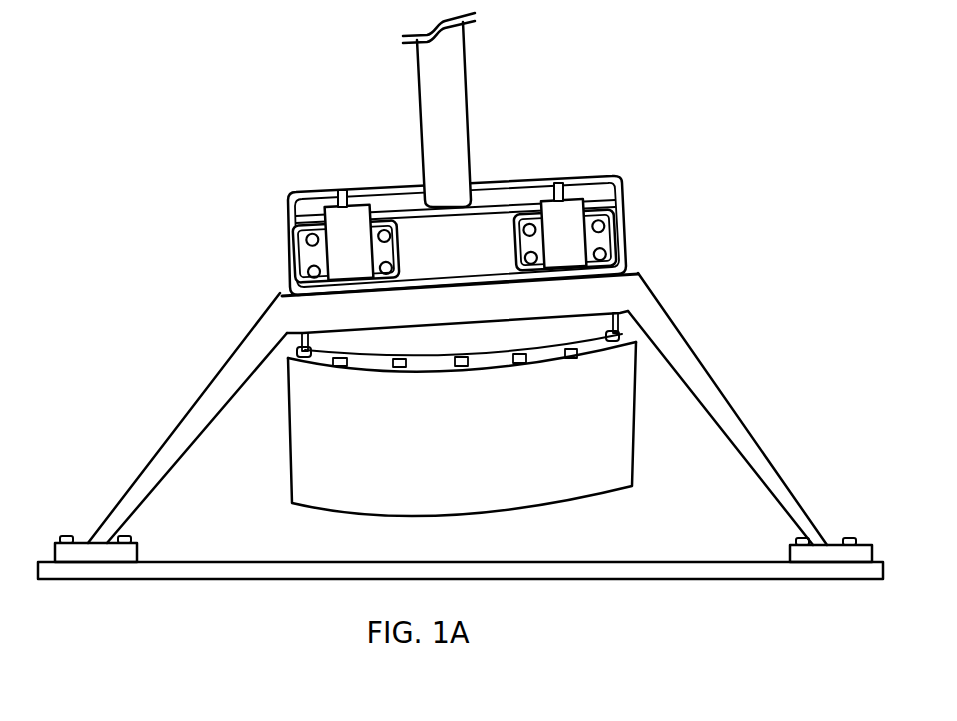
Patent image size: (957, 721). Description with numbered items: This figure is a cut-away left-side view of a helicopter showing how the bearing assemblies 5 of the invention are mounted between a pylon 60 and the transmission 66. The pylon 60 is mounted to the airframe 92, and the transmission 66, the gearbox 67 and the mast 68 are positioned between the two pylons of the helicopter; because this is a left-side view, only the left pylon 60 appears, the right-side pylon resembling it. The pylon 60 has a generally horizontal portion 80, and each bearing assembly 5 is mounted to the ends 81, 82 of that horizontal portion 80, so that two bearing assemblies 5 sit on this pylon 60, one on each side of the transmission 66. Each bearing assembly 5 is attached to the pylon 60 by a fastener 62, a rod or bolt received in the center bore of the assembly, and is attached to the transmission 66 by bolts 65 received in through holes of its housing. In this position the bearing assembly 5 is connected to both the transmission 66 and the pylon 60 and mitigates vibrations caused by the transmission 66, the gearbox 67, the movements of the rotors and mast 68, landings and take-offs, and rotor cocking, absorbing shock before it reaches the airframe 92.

The bearing assembly 5 is at (340, 218).
The pylon 60 is at (678, 330).
The fastener 62 is at (577, 177).
The bolt 65 is at (603, 222).
The transmission 66 is at (390, 203).
The gearbox 67 is at (613, 478).
The mast 68 is at (472, 137).
The horizontal portion 80 is at (323, 316).
The end 81 is at (612, 285).
The end 82 is at (297, 307).
The airframe 92 is at (728, 580).